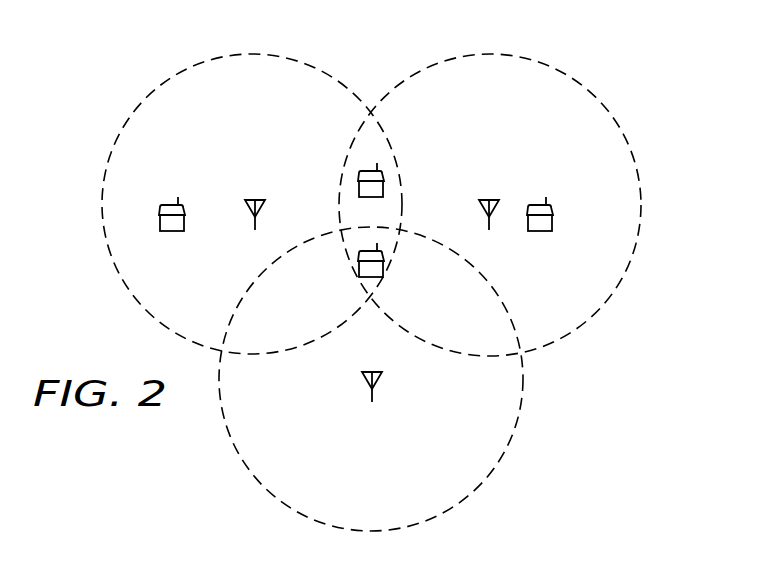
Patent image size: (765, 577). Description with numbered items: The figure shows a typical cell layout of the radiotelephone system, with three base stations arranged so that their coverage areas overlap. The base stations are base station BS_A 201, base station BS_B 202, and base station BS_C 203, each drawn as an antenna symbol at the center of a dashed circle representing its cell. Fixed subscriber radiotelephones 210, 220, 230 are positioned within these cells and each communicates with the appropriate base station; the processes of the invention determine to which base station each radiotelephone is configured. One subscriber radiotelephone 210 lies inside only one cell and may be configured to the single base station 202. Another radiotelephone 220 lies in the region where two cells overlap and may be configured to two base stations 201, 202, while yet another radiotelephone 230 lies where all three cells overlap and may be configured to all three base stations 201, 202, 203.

The base station BS_A 201 is at (254, 198).
The base station BS_B 202 is at (490, 198).
The base station BS_C 203 is at (362, 380).
The fixed subscriber radiotelephone 210 is at (553, 220).
The fixed subscriber radiotelephone 220 is at (384, 190).
The fixed subscriber radiotelephone 230 is at (384, 268).